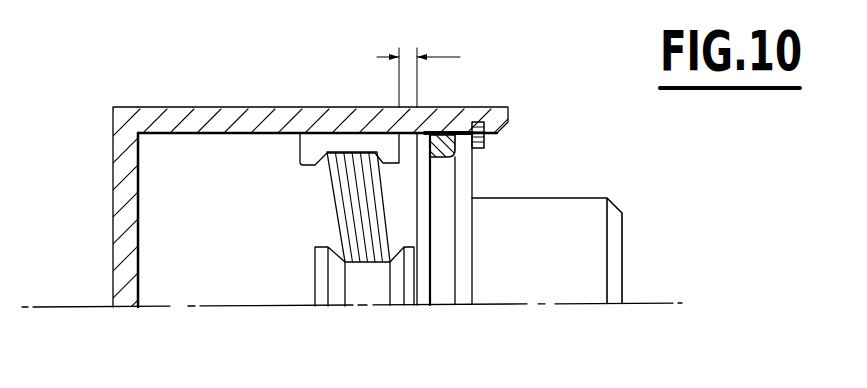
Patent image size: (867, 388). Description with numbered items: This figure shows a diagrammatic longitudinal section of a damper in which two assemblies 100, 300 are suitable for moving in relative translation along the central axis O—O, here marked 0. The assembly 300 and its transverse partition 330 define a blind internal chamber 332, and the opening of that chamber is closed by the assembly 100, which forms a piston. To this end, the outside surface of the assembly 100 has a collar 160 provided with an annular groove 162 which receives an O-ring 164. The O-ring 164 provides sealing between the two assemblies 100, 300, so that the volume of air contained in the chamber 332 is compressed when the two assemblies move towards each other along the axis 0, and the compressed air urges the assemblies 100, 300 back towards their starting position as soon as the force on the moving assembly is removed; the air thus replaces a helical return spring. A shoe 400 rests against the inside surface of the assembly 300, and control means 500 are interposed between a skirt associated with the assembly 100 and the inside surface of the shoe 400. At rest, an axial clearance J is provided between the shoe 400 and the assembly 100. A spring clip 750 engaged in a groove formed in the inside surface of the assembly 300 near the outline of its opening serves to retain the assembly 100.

The central axis 0 is at (80, 307).
The assembly 100 is at (582, 227).
The collar 160 is at (423, 290).
The annular groove 162 is at (447, 298).
The O-ring 164 is at (457, 157).
The assembly 300 is at (352, 117).
The transverse partition 330 is at (123, 222).
The blind internal chamber 332 is at (193, 257).
The shoe 400 is at (305, 148).
The control means 500 is at (337, 185).
The spring clip 750 is at (485, 142).
The axial clearance J is at (418, 64).